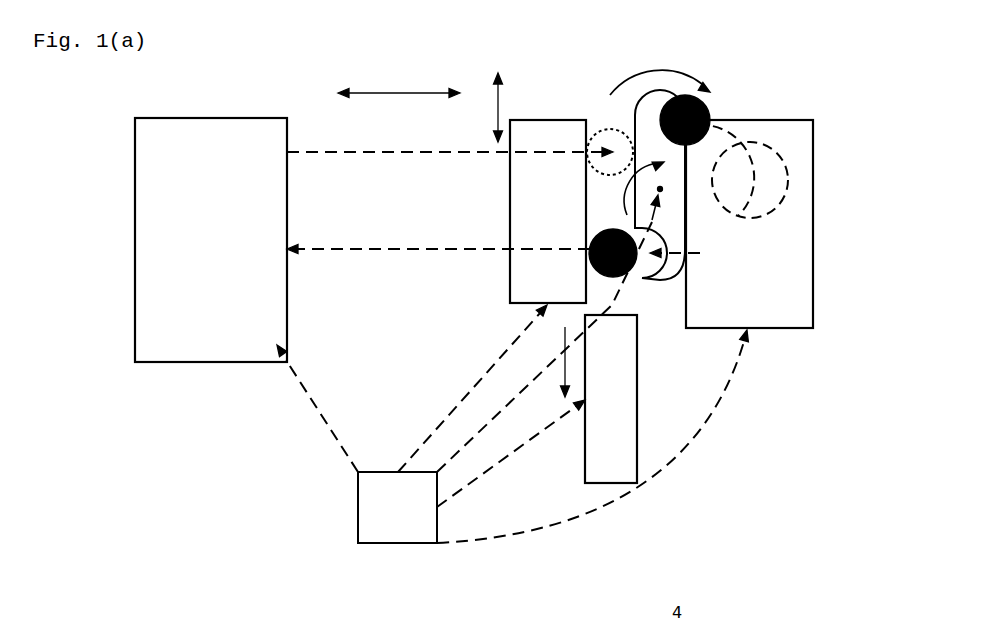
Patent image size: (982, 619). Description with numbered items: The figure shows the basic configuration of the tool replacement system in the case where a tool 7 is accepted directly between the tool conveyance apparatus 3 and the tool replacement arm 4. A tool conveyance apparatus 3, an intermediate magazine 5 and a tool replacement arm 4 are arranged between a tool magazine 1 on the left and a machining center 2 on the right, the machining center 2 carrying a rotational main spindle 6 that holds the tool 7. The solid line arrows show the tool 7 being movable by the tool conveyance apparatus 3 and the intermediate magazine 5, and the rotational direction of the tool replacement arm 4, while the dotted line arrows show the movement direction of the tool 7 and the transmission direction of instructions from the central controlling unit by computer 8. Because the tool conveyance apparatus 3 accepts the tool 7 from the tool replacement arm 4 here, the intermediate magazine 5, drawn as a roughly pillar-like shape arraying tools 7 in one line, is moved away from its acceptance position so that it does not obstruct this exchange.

The tool magazine 1 is at (211, 143).
The machining center 2 is at (788, 145).
The tool conveyance apparatus 3 is at (535, 218).
The tool replacement arm 4 is at (657, 102).
The intermediate magazine 5 is at (615, 423).
The rotational main spindle 6 is at (623, 270).
The tool 7 is at (605, 128).
The central controlling unit by computer 8 is at (512, 420).